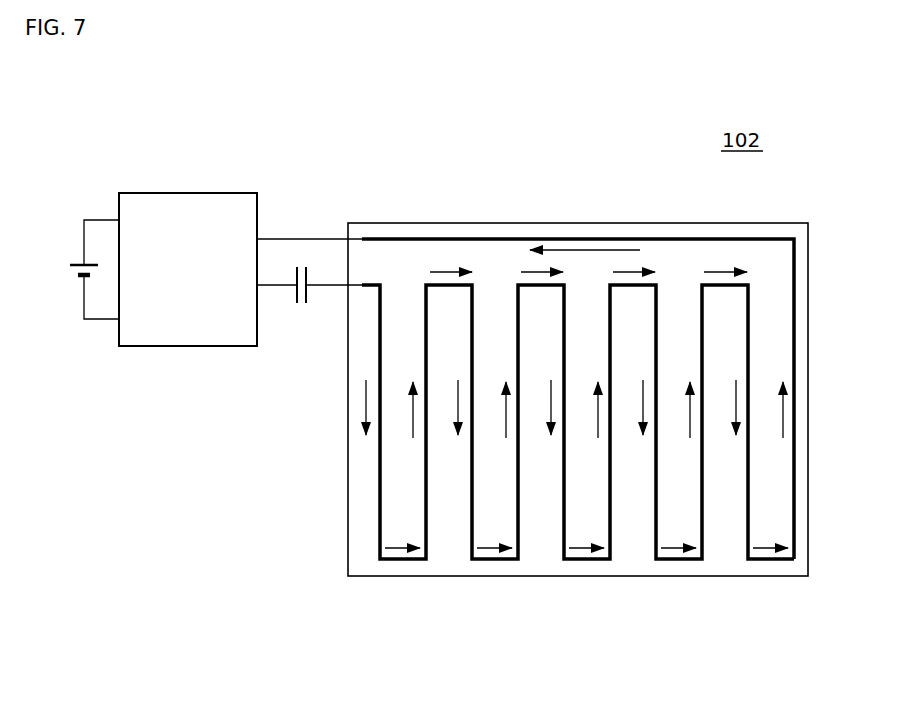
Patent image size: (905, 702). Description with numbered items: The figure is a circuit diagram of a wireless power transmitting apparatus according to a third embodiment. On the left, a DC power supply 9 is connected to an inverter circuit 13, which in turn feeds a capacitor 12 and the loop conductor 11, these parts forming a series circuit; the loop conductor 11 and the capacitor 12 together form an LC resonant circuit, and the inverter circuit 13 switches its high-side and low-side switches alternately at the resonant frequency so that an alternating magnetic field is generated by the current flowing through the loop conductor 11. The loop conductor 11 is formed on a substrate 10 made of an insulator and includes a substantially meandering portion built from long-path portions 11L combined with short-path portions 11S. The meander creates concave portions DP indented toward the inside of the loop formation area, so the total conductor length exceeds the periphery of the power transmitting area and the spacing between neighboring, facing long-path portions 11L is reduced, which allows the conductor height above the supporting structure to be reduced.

The DC power supply 9 is at (72, 258).
The substrate 10 is at (808, 223).
The loop conductor 11 is at (621, 442).
The long-path portion 11L is at (612, 503).
The short-path portion 11S is at (588, 561).
The capacitor 12 is at (298, 310).
The inverter circuit 13 is at (192, 193).
The concave portion DP is at (446, 545).